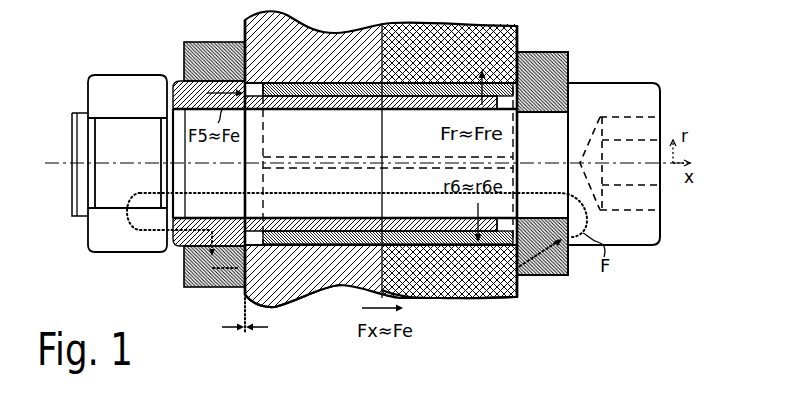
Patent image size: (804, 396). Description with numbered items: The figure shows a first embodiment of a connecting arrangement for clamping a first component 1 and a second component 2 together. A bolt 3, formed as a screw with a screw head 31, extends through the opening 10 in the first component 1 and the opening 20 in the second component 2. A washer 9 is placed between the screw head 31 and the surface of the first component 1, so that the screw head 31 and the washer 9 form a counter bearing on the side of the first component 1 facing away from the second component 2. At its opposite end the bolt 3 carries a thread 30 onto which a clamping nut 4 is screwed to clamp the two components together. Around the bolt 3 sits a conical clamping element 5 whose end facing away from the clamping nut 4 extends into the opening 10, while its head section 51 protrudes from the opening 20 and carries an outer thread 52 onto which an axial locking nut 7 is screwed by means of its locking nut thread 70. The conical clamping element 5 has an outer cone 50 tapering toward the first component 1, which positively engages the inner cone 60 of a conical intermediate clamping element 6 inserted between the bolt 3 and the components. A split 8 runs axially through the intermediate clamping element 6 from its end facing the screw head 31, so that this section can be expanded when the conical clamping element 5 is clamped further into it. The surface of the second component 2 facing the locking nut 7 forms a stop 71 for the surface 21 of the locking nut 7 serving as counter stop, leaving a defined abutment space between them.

The first component 1 is at (520, 297).
The second component 2 is at (354, 288).
The bolt 3 is at (72, 148).
The clamping nut 4 is at (108, 76).
The conical clamping element 5 is at (372, 100).
The conical intermediate clamping element 6 is at (503, 100).
The axial locking nut 7 is at (184, 42).
The split 8 is at (292, 157).
The washer 9 is at (568, 52).
The opening 10 is at (478, 293).
The opening 20 is at (283, 288).
The surface 21 is at (245, 288).
The thread 30 is at (80, 111).
The screw head 31 is at (645, 82).
The outer cone 50 is at (415, 98).
The head section 51 is at (182, 247).
The outer thread 52 is at (182, 82).
The inner cone 60 is at (466, 92).
The locking nut thread 70 is at (199, 42).
The stop 71 is at (246, 23).